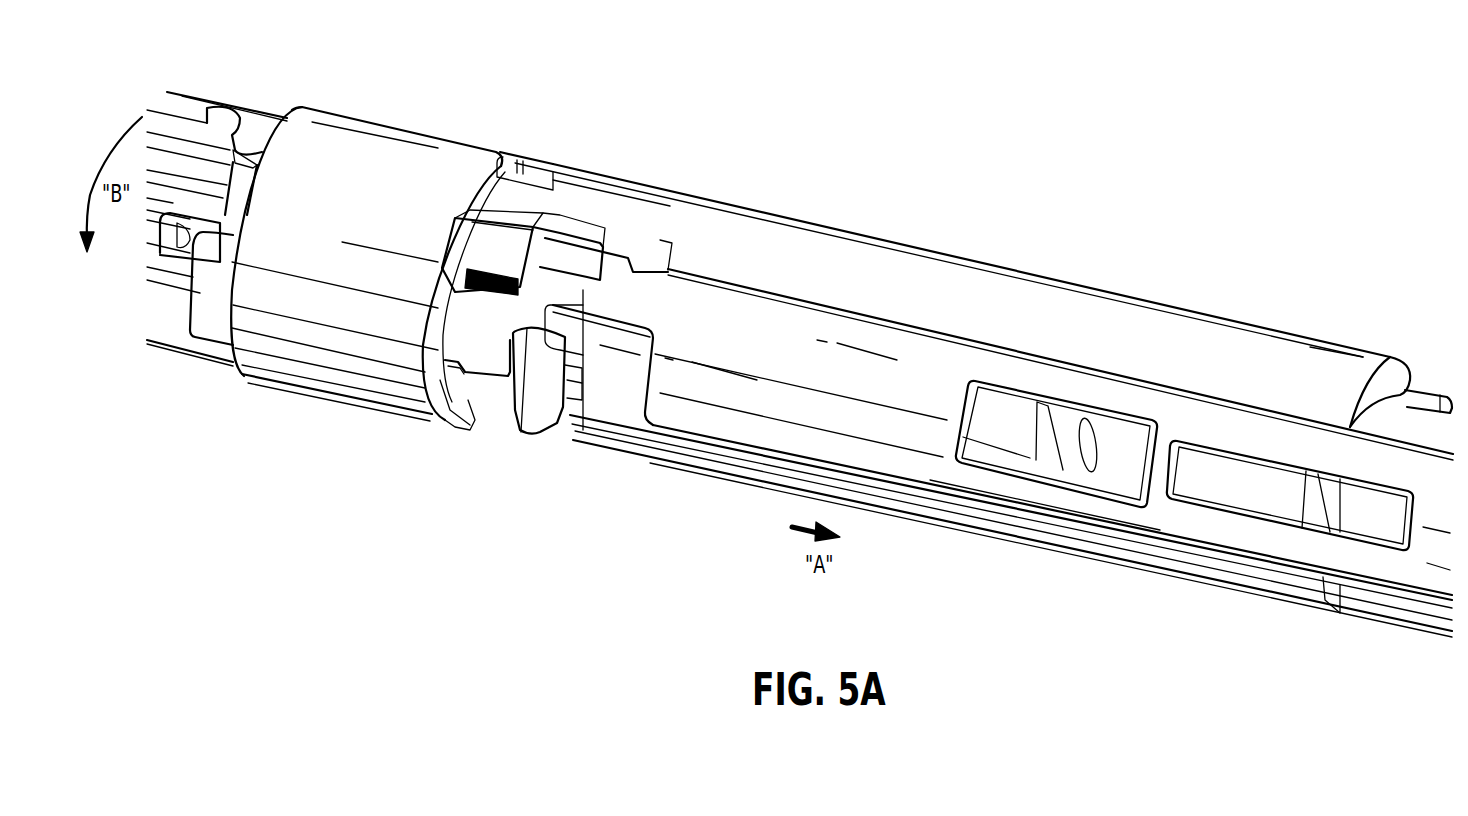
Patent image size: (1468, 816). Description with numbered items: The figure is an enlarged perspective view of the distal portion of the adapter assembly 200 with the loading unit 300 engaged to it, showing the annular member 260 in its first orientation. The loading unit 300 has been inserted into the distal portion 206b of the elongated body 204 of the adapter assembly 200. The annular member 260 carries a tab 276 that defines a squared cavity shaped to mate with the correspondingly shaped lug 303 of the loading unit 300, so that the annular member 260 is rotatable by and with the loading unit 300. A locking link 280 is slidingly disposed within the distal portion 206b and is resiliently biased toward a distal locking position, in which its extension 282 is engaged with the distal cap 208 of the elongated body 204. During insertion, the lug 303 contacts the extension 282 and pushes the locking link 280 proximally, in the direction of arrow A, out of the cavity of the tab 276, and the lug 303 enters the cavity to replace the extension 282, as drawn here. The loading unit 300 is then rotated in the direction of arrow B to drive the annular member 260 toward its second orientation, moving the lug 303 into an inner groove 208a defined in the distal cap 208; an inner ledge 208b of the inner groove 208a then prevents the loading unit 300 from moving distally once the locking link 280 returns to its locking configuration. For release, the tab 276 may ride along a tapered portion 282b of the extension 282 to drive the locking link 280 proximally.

The adapter assembly 200 is at (890, 170).
The elongated body 204 is at (1040, 235).
The distal portion of elongated body 206b is at (467, 423).
The distal cap 208 is at (290, 380).
The inner groove 208a is at (483, 350).
The inner ledge 208b is at (450, 421).
The annular member 260 is at (502, 452).
The tab 276 is at (523, 313).
The locking link 280 is at (737, 493).
The extension of locking link 282 is at (580, 287).
The tapered portion of extension 282b is at (525, 350).
The loading unit 300 is at (175, 337).
The lug 303 is at (500, 257).